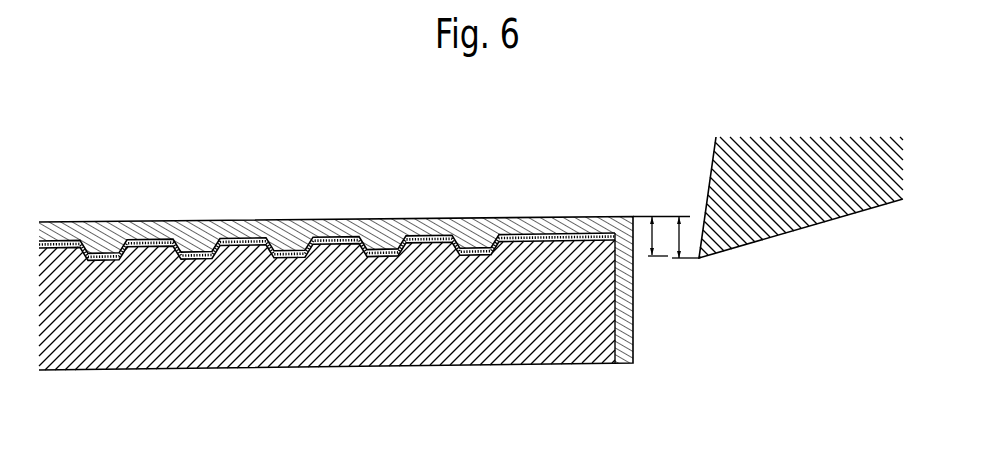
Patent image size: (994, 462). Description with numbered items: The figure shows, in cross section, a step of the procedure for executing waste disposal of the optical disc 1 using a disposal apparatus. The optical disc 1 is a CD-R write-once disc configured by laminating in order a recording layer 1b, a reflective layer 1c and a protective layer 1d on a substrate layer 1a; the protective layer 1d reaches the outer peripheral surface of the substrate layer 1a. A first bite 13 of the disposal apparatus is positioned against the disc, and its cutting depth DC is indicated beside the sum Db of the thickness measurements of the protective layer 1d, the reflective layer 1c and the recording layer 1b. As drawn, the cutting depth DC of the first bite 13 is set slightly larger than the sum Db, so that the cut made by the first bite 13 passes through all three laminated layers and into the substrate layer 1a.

The optical disc 1 is at (186, 222).
The substrate layer 1a is at (339, 352).
The recording layer 1b is at (287, 245).
The reflective layer 1c is at (382, 250).
The protective layer 1d is at (473, 227).
The first bite 13 is at (801, 160).
The sum of thickness measurements Db is at (651, 232).
The cutting depth DC is at (679, 232).